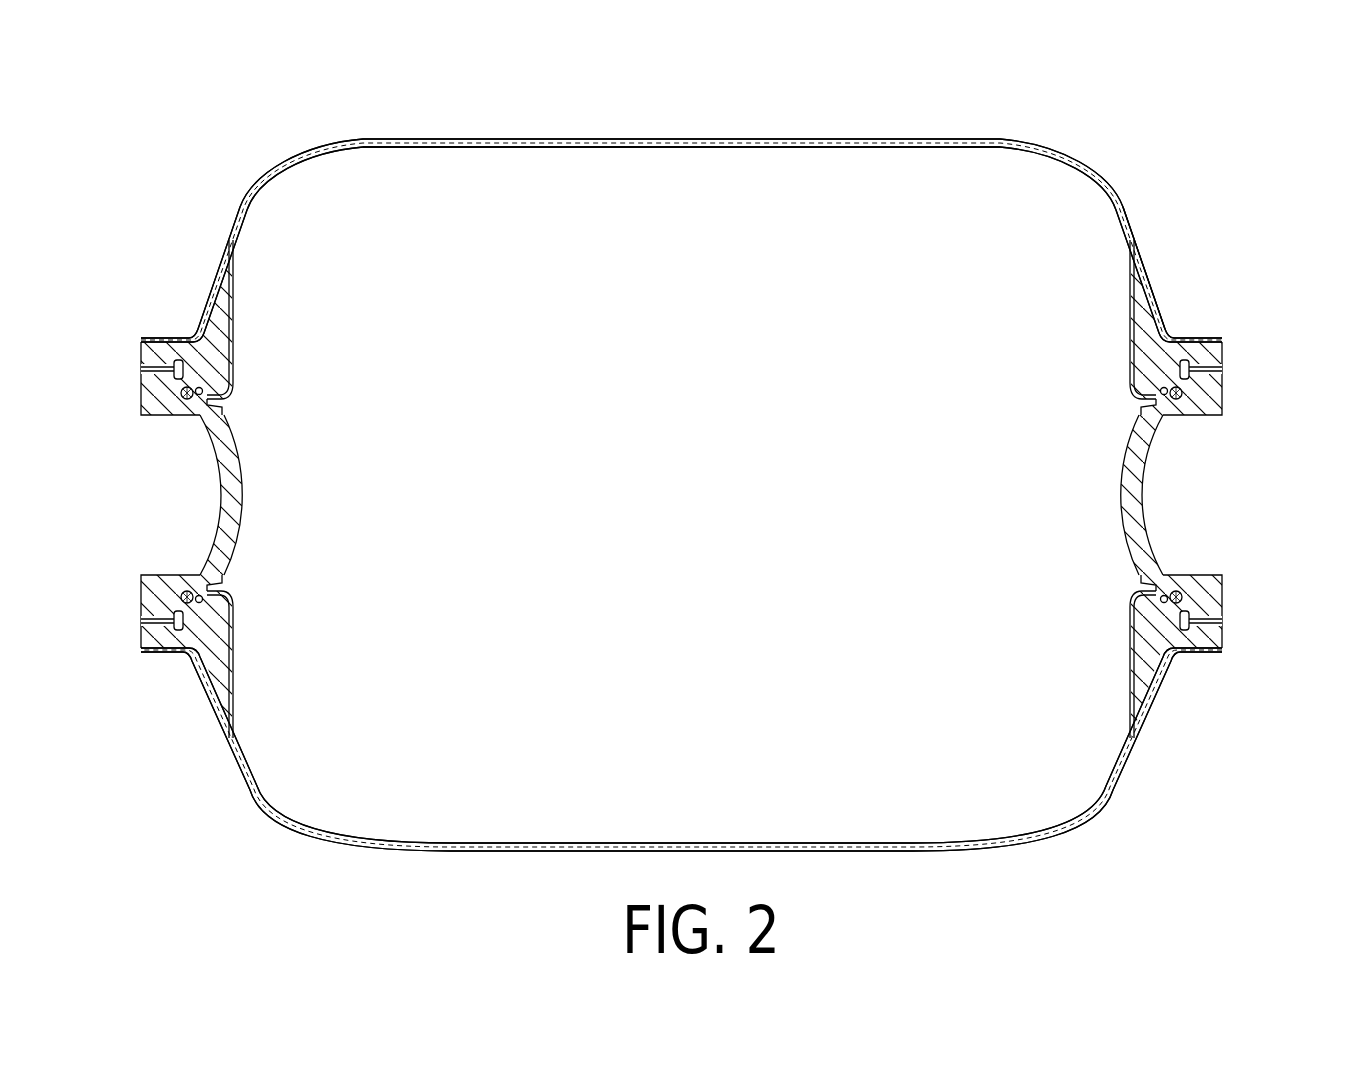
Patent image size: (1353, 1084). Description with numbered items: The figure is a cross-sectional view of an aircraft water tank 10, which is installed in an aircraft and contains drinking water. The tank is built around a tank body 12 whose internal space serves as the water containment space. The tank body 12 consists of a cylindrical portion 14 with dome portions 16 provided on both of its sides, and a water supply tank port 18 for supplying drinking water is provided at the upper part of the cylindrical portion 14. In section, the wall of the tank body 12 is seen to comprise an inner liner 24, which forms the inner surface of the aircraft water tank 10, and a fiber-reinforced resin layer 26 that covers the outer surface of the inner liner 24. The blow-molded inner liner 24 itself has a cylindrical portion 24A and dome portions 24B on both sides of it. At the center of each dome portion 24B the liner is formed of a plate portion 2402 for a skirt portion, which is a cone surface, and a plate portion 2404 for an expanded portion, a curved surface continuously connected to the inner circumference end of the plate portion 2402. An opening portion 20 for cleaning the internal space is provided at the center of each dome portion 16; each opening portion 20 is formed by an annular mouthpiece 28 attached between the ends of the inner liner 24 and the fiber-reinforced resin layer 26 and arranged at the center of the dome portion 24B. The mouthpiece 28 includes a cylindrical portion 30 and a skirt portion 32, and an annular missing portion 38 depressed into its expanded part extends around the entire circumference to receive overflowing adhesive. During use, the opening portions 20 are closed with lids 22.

The aircraft water tank 10 is at (1077, 102).
The tank body 12 is at (1147, 809).
The cylindrical portion 14 is at (1058, 87).
The dome portions 16 is at (310, 134).
The water supply tank port 18 is at (1222, 370).
The opening portion 20 is at (264, 502).
The lid 22 is at (222, 490).
The inner liner 24 is at (648, 148).
The cylindrical portion 24A is at (681, 177).
The dome portions 24B is at (240, 232).
The plate portion for skirt portion 2402 is at (233, 322).
The plate portion for expanded portion 2404 is at (222, 397).
The fiber-reinforced resin layer 26 is at (648, 140).
The mouthpiece 28 is at (143, 356).
The cylindrical portion 30 is at (1222, 387).
The skirt portion 32 is at (1150, 305).
The annular missing portion 38 is at (1162, 390).